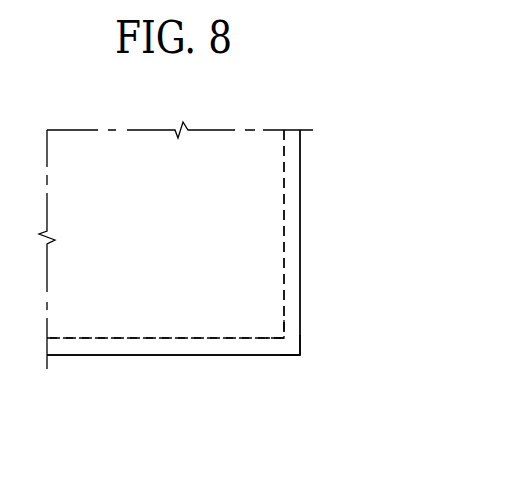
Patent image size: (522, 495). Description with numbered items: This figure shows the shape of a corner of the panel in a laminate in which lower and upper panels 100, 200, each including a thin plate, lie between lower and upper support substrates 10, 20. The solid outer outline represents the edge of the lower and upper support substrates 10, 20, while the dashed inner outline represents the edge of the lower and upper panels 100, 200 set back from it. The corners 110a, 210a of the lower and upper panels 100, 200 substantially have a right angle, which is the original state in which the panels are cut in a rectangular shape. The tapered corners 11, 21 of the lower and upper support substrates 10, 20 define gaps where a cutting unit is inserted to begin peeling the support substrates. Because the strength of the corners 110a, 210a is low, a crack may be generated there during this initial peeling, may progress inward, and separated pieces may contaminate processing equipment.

The lower panel 100 is at (270, 274).
The upper panel 200 is at (270, 274).
The lower support substrate 10 is at (290, 313).
The upper support substrate 20 is at (290, 313).
The tapered corner of the lower support substrate 11 is at (285, 348).
The tapered corner of the upper support substrate 21 is at (285, 348).
The corner of the lower panel 110a is at (283, 333).
The corner of the upper panel 210a is at (283, 333).